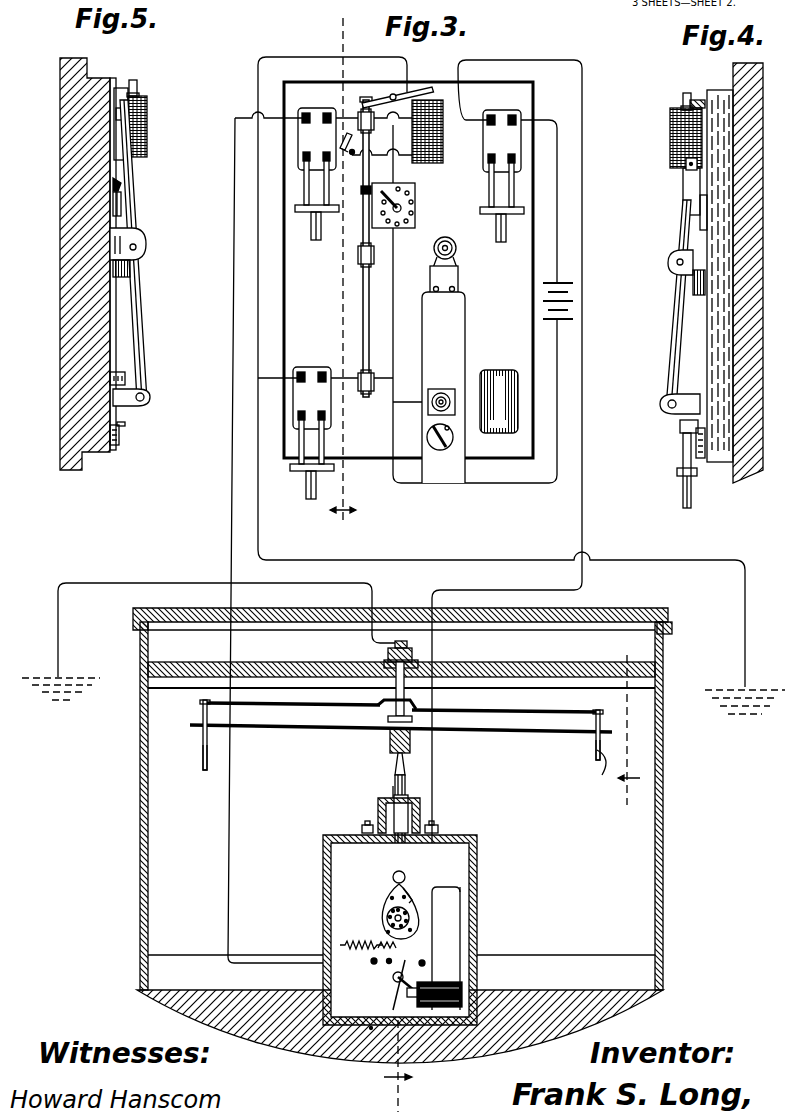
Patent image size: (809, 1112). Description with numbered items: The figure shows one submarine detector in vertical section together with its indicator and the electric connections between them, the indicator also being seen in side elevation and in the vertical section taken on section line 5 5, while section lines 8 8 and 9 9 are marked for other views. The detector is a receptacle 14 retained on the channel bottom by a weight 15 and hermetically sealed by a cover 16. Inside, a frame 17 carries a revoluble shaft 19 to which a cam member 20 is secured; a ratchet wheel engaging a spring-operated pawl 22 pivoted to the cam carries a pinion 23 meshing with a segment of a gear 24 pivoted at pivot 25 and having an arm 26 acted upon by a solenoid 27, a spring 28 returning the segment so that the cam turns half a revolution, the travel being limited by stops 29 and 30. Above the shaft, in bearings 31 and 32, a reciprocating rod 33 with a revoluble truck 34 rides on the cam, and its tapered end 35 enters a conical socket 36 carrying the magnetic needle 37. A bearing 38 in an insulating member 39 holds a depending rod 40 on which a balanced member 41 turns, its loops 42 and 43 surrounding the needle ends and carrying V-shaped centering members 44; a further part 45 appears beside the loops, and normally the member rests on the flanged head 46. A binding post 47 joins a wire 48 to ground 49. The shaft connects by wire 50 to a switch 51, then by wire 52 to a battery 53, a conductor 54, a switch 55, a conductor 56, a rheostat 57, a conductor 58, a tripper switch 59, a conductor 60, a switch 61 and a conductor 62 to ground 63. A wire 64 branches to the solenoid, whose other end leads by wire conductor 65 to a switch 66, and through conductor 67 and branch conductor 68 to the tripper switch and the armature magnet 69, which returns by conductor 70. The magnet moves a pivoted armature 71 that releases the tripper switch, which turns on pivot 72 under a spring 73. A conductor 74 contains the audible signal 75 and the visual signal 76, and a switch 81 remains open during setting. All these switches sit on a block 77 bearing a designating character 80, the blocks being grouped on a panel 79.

In FIG. 3, the section line 5— 5 is at (343, 273).
In FIG. 3, the section line 8— 8 is at (393, 792).
In FIG. 3, the section line 9— 9 is at (629, 725).
In FIG. 3, the receptacle 14 is at (661, 878).
In FIG. 3, the weight 15 is at (510, 1043).
In FIG. 3, the cover 16 is at (600, 620).
In FIG. 3, the frame 17 is at (478, 863).
In FIG. 3, the revoluble shaft 19 is at (390, 905).
In FIG. 3, the cam member 20 is at (418, 896).
In FIG. 3, the spring-operated pawl 22 is at (407, 893).
In FIG. 3, the pinion 23 is at (388, 915).
In FIG. 3, the segment of a gear 24 is at (385, 939).
In FIG. 3, the pivot 25 is at (396, 981).
In FIG. 3, the arm 26 is at (369, 1033).
In FIG. 3, the solenoid 27 is at (445, 1012).
In FIG. 3, the spring 28 is at (343, 945).
In FIG. 3, the stop 29 is at (392, 977).
In FIG. 3, the stop 30 is at (425, 961).
In FIG. 3, the bearing 31 is at (413, 797).
In FIG. 3, the bearing 32 is at (421, 828).
In FIG. 3, the reciprocating rod 33 is at (397, 779).
In FIG. 3, the revoluble truck 34 is at (393, 877).
In FIG. 3, the tapered end 35 is at (406, 768).
In FIG. 3, the conical socket 36 is at (390, 742).
In FIG. 3, the magnetic needle 37 is at (298, 729).
In FIG. 3, the bearing 38 is at (414, 663).
In FIG. 3, the insulating member 39 is at (545, 673).
In FIG. 3, the depending rod 40 is at (396, 690).
In FIG. 3, the member 41 is at (380, 704).
In FIG. 3, the loop 42 is at (596, 746).
In FIG. 3, the loop 43 is at (203, 757).
In FIG. 3, the V-shaped centering member 44 is at (203, 712).
In FIG. 3, the hook / section line 45 is at (600, 773).
In FIG. 3, the flanged head 46 is at (390, 719).
In FIG. 3, the binding post 47 is at (399, 641).
In FIG. 3, the wire 48 is at (160, 583).
In FIG. 3, the ground 49 is at (61, 677).
In FIG. 3, the wire 50 is at (434, 908).
In FIG. 4, the switch 51 is at (703, 145).
In FIG. 3, the switch 51 is at (512, 112).
In FIG. 3, the wire 52 is at (558, 200).
In FIG. 3, the battery 53 is at (575, 302).
In FIG. 3, the conductor 54 is at (558, 439).
In FIG. 5, the switch 55 is at (117, 437).
In FIG. 4, the switch 55 is at (700, 446).
In FIG. 3, the switch 55 is at (440, 452).
In FIG. 3, the conductor 56 is at (399, 275).
In FIG. 5, the rheostat 57 is at (121, 208).
In FIG. 4, the rheostat 57 is at (707, 210).
In FIG. 3, the rheostat 57 is at (416, 205).
In FIG. 3, the conductor 58 is at (374, 123).
In FIG. 5, the tripper switch 59 is at (130, 166).
In FIG. 4, the tripper switch 59 is at (681, 230).
In FIG. 3, the tripper switch 59 is at (365, 287).
In FIG. 3, the conductor 60 is at (332, 378).
In FIG. 4, the switch 61 is at (683, 448).
In FIG. 3, the switch 61 is at (303, 367).
In FIG. 3, the conductor 62 is at (258, 505).
In FIG. 3, the ground 63 is at (745, 691).
In FIG. 3, the wire 64 is at (462, 923).
In FIG. 3, the wire conductor 65 is at (260, 963).
In FIG. 3, the switch 66 is at (299, 108).
In FIG. 3, the conductor 67 is at (343, 118).
In FIG. 3, the branch conductor 68 is at (356, 157).
In FIG. 5, the armature magnet 69 is at (148, 120).
In FIG. 3, the armature magnet 69 is at (440, 145).
In FIG. 3, the conductor 70 is at (368, 98).
In FIG. 5, the pivoted armature 71 is at (138, 90).
In FIG. 4, the pivoted armature 71 is at (688, 93).
In FIG. 3, the pivoted armature 71 is at (398, 96).
In FIG. 5, the pivot 72 is at (137, 247).
In FIG. 4, the pivot 72 is at (682, 259).
In FIG. 3, the pivot 72 is at (360, 254).
In FIG. 5, the spring 73 is at (122, 185).
In FIG. 3, the spring 73 is at (364, 192).
In FIG. 3, the conductor 74 is at (467, 332).
In FIG. 5, the audible signal 75 is at (125, 273).
In FIG. 4, the audible signal 75 is at (697, 277).
In FIG. 3, the audible signal 75 is at (458, 284).
In FIG. 5, the visual signal 76 is at (149, 396).
In FIG. 4, the visual signal 76 is at (667, 412).
In FIG. 3, the visual signal 76 is at (440, 380).
In FIG. 5, the block 77 is at (97, 445).
In FIG. 4, the block 77 is at (728, 198).
In FIG. 3, the block 77 is at (535, 256).
In FIG. 5, the panel 79 is at (70, 88).
In FIG. 4, the panel 79 is at (750, 78).
In FIG. 3, the designating character 80 is at (512, 393).
In FIG. 3, the switch 81 is at (350, 134).